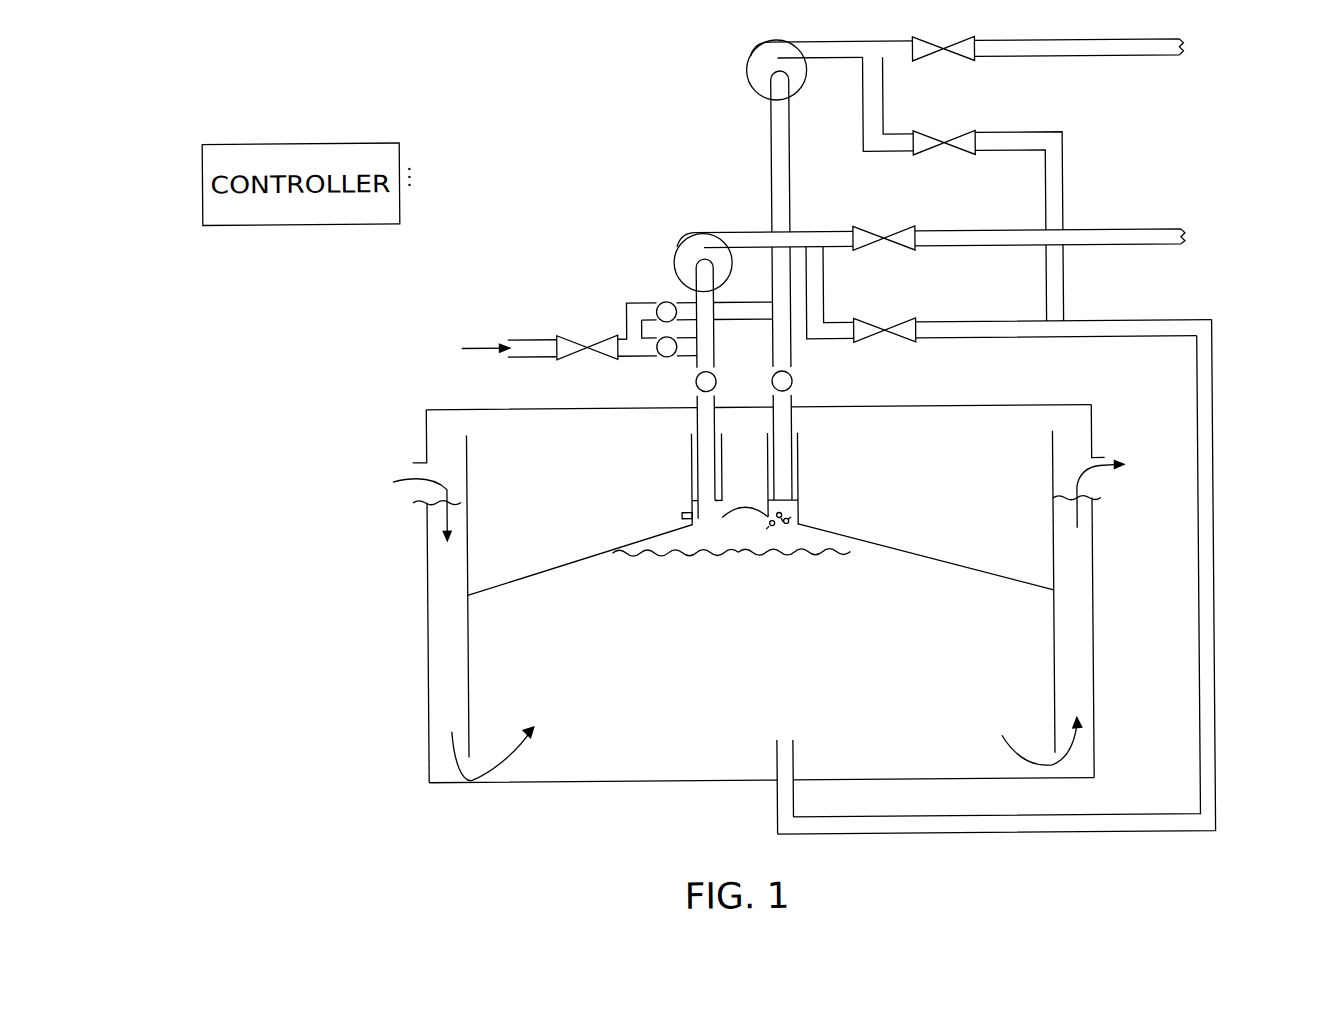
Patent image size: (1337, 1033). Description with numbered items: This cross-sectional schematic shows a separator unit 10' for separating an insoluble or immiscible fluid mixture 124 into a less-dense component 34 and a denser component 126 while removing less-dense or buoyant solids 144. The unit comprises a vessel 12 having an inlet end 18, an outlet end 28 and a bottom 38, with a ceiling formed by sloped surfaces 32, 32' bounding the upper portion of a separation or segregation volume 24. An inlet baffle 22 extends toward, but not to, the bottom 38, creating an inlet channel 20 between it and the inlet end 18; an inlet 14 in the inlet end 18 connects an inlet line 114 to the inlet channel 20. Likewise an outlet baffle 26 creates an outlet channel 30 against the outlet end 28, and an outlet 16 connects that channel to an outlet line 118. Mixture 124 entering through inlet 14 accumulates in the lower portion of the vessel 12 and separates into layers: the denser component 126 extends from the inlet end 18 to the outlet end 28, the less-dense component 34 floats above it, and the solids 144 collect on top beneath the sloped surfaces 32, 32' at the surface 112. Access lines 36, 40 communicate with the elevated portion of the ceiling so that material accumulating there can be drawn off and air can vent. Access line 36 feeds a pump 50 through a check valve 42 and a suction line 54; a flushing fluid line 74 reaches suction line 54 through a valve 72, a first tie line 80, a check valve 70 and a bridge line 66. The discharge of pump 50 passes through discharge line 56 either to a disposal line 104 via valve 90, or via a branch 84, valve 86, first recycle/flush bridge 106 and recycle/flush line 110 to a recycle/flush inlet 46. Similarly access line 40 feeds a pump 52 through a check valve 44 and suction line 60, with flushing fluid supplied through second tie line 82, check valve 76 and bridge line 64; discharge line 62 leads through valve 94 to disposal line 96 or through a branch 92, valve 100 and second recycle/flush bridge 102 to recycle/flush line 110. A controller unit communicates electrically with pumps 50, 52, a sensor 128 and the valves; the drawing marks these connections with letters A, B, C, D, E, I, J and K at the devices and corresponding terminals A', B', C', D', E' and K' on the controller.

The separator unit 10' is at (283, 816).
The vessel 12 is at (427, 734).
The inlet 14 is at (414, 499).
The outlet 16 is at (1099, 502).
The inlet end 18 is at (427, 633).
The inlet channel 20 is at (444, 565).
The inlet baffle 22 is at (469, 680).
The separation or segregation volume 24 is at (721, 661).
The outlet baffle 26 is at (1053, 700).
The outlet end 28 is at (1093, 660).
The outlet channel 30 is at (1079, 588).
The ceiling or sloped surface 32 is at (580, 555).
The ceiling or sloped surface 32' is at (926, 553).
The less-dense component 34 is at (832, 538).
The access line 36 is at (702, 472).
The bottom 38 is at (547, 781).
The access line 40 is at (786, 470).
The check valve 42 is at (719, 385).
The check valve 44 is at (795, 385).
The recycle/flush inlet 46 is at (783, 788).
The pump 50 is at (683, 232).
The pump 52 is at (761, 53).
The suction line 54 is at (708, 300).
The discharge line 56 is at (746, 232).
The suction line 60 is at (780, 165).
The discharge line 62 is at (815, 45).
The bridge line 64 is at (692, 304).
The bridge line 66 is at (695, 345).
The check valve 70 is at (682, 358).
The valve 72 is at (568, 356).
The flushing fluid line 74 is at (533, 344).
The check valve 76 is at (630, 306).
The first tie line 80 is at (651, 354).
The second tie line 82 is at (640, 316).
The pipe 84 is at (820, 312).
The valve 86 is at (910, 322).
The valve 90 is at (868, 230).
The pipe 92 is at (889, 118).
The valve 94 is at (978, 60).
The disposal line 96 is at (1116, 47).
The valve 100 is at (973, 133).
The second recycle/flush bridge 102 is at (1030, 152).
The disposal line 104 is at (1118, 232).
The first recycle/flush bridge 106 is at (1116, 329).
The recycle/flush line 110 is at (1216, 402).
The liquid 112 is at (713, 561).
The inlet line 114 is at (414, 458).
The outlet line 118 is at (1099, 460).
The insoluble or immiscible fluid mixture 124 is at (393, 479).
The denser component 126 is at (1098, 472).
The sensor 128 is at (691, 509).
The less-dense or buoyant solids 144 is at (786, 514).
The sensor signal A is at (664, 518).
The control signal B is at (651, 270).
The control signal C is at (587, 373).
The control signal D is at (890, 269).
The control signal E is at (892, 361).
The control signal I is at (751, 80).
The control signal J is at (947, 62).
The control signal K is at (949, 175).
The controller input A' is at (245, 249).
The controller output B' is at (302, 249).
The controller output C' is at (354, 248).
The controller output D' is at (405, 248).
The controller output E' is at (425, 206).
The controller output K' is at (424, 150).